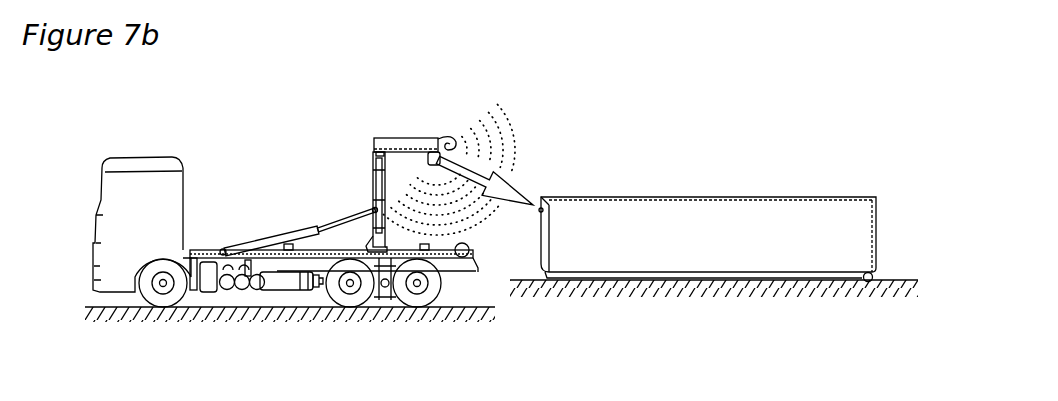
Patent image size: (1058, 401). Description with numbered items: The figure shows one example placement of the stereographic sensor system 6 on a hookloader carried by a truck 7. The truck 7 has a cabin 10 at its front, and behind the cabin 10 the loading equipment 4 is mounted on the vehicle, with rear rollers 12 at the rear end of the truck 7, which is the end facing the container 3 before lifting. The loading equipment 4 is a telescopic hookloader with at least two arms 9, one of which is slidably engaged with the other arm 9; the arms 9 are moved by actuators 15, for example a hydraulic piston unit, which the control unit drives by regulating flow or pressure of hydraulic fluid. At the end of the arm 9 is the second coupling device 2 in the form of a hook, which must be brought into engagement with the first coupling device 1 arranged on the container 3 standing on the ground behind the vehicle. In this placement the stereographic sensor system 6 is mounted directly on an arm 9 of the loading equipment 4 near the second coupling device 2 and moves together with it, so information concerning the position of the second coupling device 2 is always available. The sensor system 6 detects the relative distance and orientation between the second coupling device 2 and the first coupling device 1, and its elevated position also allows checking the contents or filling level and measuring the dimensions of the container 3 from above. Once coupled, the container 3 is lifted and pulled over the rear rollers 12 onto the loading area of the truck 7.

The first coupling device 1 is at (544, 212).
The second coupling device 2 is at (447, 138).
The container 3 is at (742, 220).
The loading equipment 4 is at (334, 195).
The stereographic sensor system 6 is at (433, 157).
The truck 7 is at (268, 265).
The articulated arm 9 is at (373, 165).
The cabin 10 is at (163, 188).
The rear rollers 12 is at (470, 258).
The actuators 15 is at (298, 232).